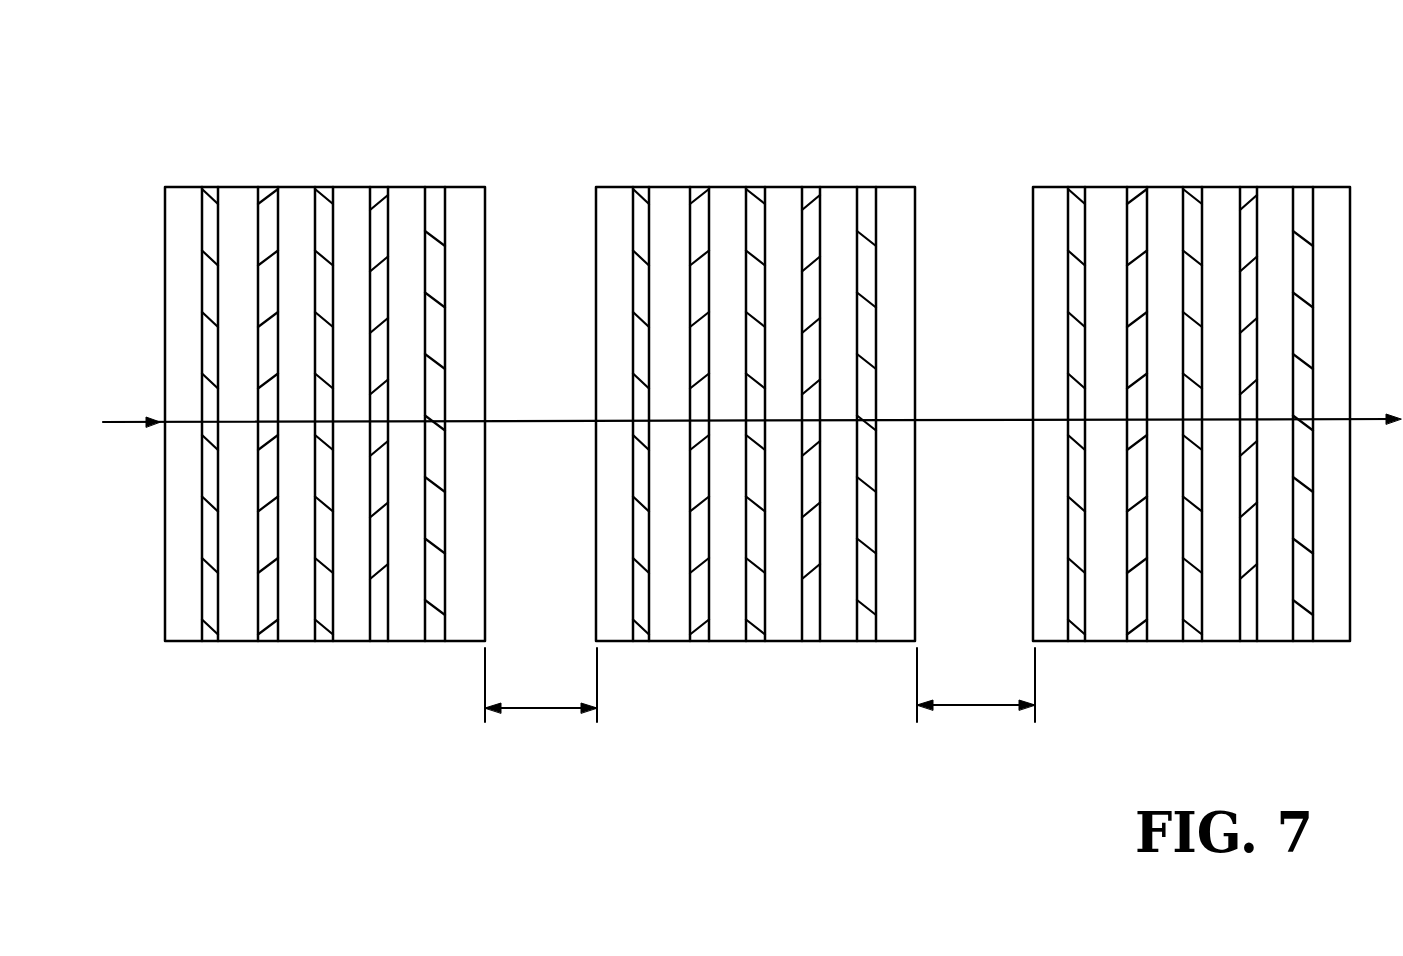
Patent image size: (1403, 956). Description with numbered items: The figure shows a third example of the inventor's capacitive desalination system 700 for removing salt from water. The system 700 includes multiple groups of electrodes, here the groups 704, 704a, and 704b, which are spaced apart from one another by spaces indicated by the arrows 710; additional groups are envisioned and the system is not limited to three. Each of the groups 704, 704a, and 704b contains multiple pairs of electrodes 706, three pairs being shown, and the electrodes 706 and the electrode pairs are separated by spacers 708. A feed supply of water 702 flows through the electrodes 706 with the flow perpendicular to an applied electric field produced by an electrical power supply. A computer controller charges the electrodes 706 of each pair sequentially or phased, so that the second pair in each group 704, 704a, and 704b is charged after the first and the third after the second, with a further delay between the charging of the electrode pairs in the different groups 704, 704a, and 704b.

The capacitive desalination system 700 is at (1050, 72).
The feed supply of water 702 is at (123, 425).
The group of electrodes 704 is at (478, 160).
The group of electrodes 704a is at (905, 160).
The group of electrodes 704b is at (1332, 158).
The electrodes 706 is at (453, 628).
The spacers 708 is at (867, 632).
The arrows indicating spaces 710 is at (556, 708).